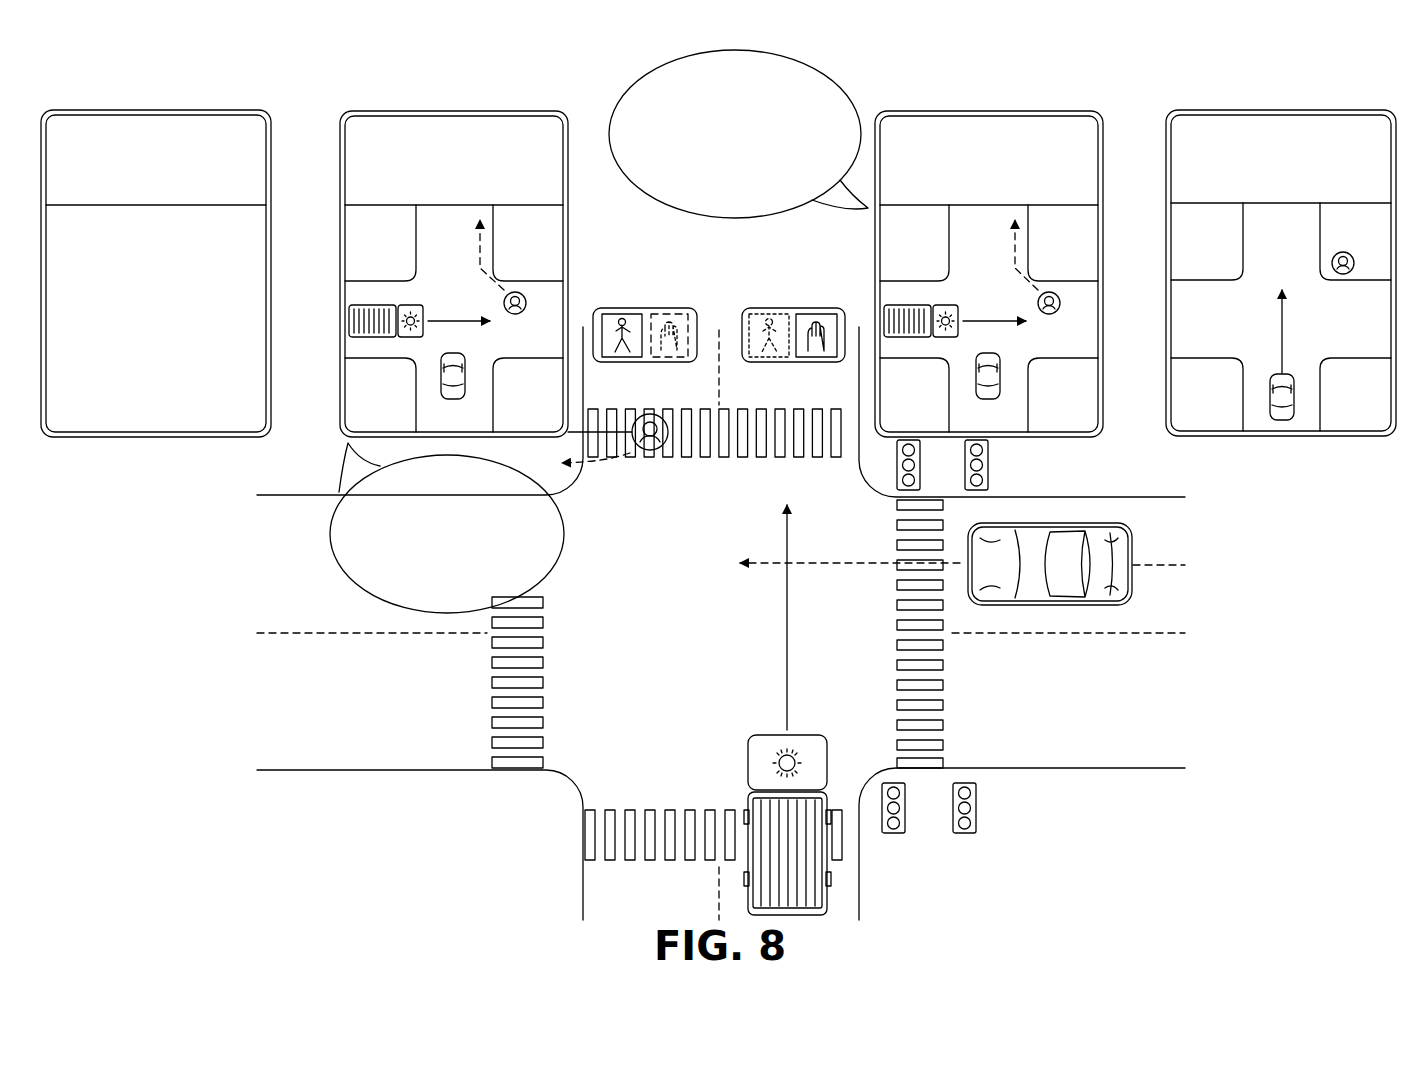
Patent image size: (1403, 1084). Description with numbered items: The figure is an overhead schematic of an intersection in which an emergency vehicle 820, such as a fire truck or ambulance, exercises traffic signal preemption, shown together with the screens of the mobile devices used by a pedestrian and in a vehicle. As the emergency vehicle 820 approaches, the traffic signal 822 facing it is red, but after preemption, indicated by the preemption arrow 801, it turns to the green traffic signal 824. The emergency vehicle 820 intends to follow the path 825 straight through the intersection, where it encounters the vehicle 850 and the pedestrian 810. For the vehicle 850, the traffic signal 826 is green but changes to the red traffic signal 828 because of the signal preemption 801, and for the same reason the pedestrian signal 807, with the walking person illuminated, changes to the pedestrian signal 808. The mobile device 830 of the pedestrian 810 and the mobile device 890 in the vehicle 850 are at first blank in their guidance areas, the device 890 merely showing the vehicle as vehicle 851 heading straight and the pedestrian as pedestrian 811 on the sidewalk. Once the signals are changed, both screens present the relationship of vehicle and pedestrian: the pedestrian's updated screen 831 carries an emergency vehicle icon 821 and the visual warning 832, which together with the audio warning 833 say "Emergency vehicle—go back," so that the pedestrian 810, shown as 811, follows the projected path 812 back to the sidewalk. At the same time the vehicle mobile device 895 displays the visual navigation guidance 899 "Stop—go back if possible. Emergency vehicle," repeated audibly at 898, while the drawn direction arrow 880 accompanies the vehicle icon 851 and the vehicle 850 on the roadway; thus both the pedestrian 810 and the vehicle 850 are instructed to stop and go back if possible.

The preemption arrow 801 is at (333, 254).
The pedestrian signal 807 is at (648, 308).
The pedestrian signal 808 is at (790, 308).
The pedestrian 810 is at (649, 451).
The pedestrian 811 is at (518, 292).
The projected path 812 is at (468, 251).
The emergency vehicle 820 is at (747, 758).
The emergency vehicle icon 821 is at (369, 340).
The traffic signal 822 is at (893, 837).
The green traffic signal 824 is at (978, 820).
The path 825 is at (786, 637).
The traffic signal 826 is at (456, 318).
The red traffic signal 828 is at (990, 447).
The mobile device 830 is at (150, 110).
The display panel 831 is at (452, 111).
The visual warning 832 is at (486, 124).
The audio warning 833 is at (330, 533).
The vehicle 850 is at (1065, 606).
The vehicle 851 is at (466, 380).
The vehicle travel direction arrow 880 is at (1283, 323).
The mobile device 890 is at (1280, 110).
The vehicle mobile device 895 is at (986, 111).
The audible navigation guidance 898 is at (851, 96).
The visual navigation guidance 899 is at (1096, 130).